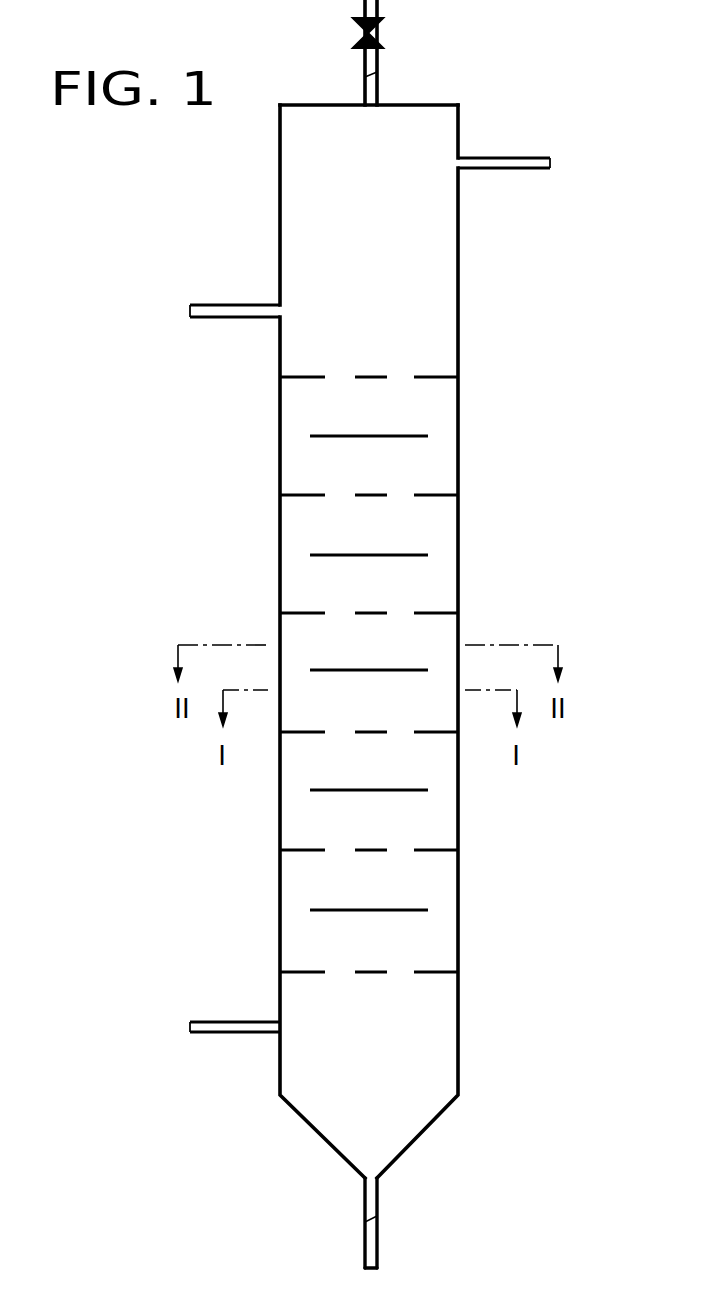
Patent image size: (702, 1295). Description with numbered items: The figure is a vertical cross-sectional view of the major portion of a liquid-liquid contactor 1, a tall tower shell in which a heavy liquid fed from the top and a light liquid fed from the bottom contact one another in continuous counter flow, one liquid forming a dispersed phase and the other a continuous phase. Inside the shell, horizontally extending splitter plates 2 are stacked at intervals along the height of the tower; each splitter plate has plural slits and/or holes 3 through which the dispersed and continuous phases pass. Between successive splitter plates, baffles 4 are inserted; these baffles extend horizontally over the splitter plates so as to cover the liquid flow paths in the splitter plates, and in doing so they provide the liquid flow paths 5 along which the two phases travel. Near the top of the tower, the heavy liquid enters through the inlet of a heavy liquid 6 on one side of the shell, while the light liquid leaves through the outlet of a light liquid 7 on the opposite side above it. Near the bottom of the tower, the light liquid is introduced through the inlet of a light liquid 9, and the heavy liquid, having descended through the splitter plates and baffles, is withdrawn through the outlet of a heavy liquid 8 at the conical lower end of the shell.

The contactor 1 is at (475, 278).
The splitter plates 2 is at (430, 496).
The slits and/or holes 3 is at (340, 494).
The baffles 4 is at (400, 436).
The liquid flow paths 5 is at (292, 438).
The inlet of a heavy liquid 6 is at (222, 305).
The outlet of a light liquid 7 is at (505, 158).
The outlet of a heavy liquid 8 is at (378, 1240).
The inlet of a light liquid 9 is at (214, 1021).